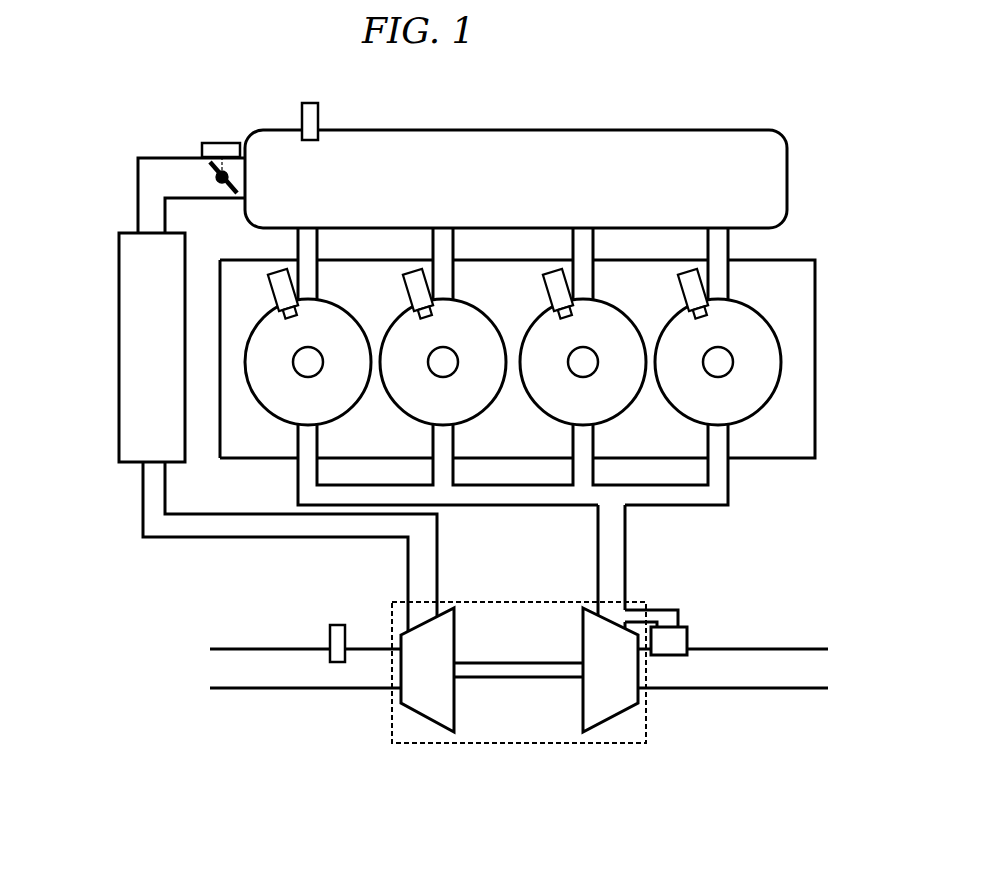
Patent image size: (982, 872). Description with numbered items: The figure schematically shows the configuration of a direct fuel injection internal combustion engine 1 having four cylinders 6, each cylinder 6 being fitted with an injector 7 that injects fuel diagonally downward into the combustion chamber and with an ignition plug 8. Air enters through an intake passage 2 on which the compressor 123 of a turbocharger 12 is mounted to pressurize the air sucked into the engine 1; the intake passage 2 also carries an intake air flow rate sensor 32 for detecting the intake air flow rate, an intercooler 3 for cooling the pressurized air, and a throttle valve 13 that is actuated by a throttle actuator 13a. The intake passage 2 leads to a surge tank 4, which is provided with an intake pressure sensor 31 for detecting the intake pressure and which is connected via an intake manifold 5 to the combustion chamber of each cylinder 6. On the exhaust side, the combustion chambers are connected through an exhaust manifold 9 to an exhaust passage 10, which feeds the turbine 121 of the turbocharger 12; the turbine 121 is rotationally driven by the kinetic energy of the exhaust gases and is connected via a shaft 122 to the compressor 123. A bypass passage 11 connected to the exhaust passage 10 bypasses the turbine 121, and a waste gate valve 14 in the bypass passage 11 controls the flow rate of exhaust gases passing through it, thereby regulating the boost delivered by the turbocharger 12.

The engine 1 is at (803, 126).
The intake passage 2 is at (218, 540).
The intercooler 3 is at (119, 323).
The surge tank 4 is at (458, 130).
The intake manifold 5 is at (298, 245).
The cylinder 6 is at (331, 302).
The injector 7 is at (270, 293).
The ignition plug 8 is at (298, 352).
The exhaust manifold 9 is at (297, 472).
The exhaust passage 10 is at (626, 572).
The bypass passage 11 is at (679, 610).
The turbocharger 12 is at (392, 717).
The throttle valve 13 is at (210, 166).
The throttle actuator 13a is at (221, 143).
The waste gate valve 14 is at (689, 636).
The intake pressure sensor 31 is at (303, 104).
The intake air flow rate sensor 32 is at (332, 625).
The turbine 121 is at (613, 720).
The shaft 122 is at (515, 660).
The compressor 123 is at (421, 720).